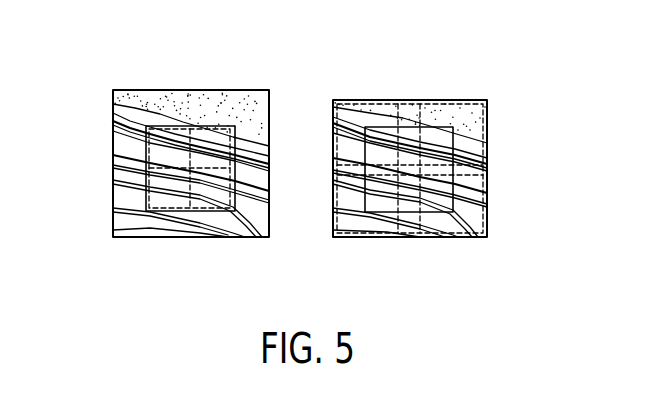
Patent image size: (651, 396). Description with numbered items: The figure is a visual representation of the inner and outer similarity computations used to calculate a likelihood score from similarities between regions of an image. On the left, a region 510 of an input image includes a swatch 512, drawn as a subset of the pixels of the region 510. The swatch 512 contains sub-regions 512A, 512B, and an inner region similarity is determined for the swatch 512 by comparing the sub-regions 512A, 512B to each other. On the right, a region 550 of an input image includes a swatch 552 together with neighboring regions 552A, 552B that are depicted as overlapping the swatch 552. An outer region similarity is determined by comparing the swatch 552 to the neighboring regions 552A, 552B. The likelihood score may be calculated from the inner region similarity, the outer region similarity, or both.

The region 510 is at (202, 89).
The swatch 512 is at (148, 212).
The sub-region 512A is at (172, 150).
The sub-region 512B is at (172, 188).
The region 550 is at (410, 100).
The swatch 552 is at (408, 213).
The neighboring region 552A is at (475, 142).
The neighboring region 552B is at (475, 216).